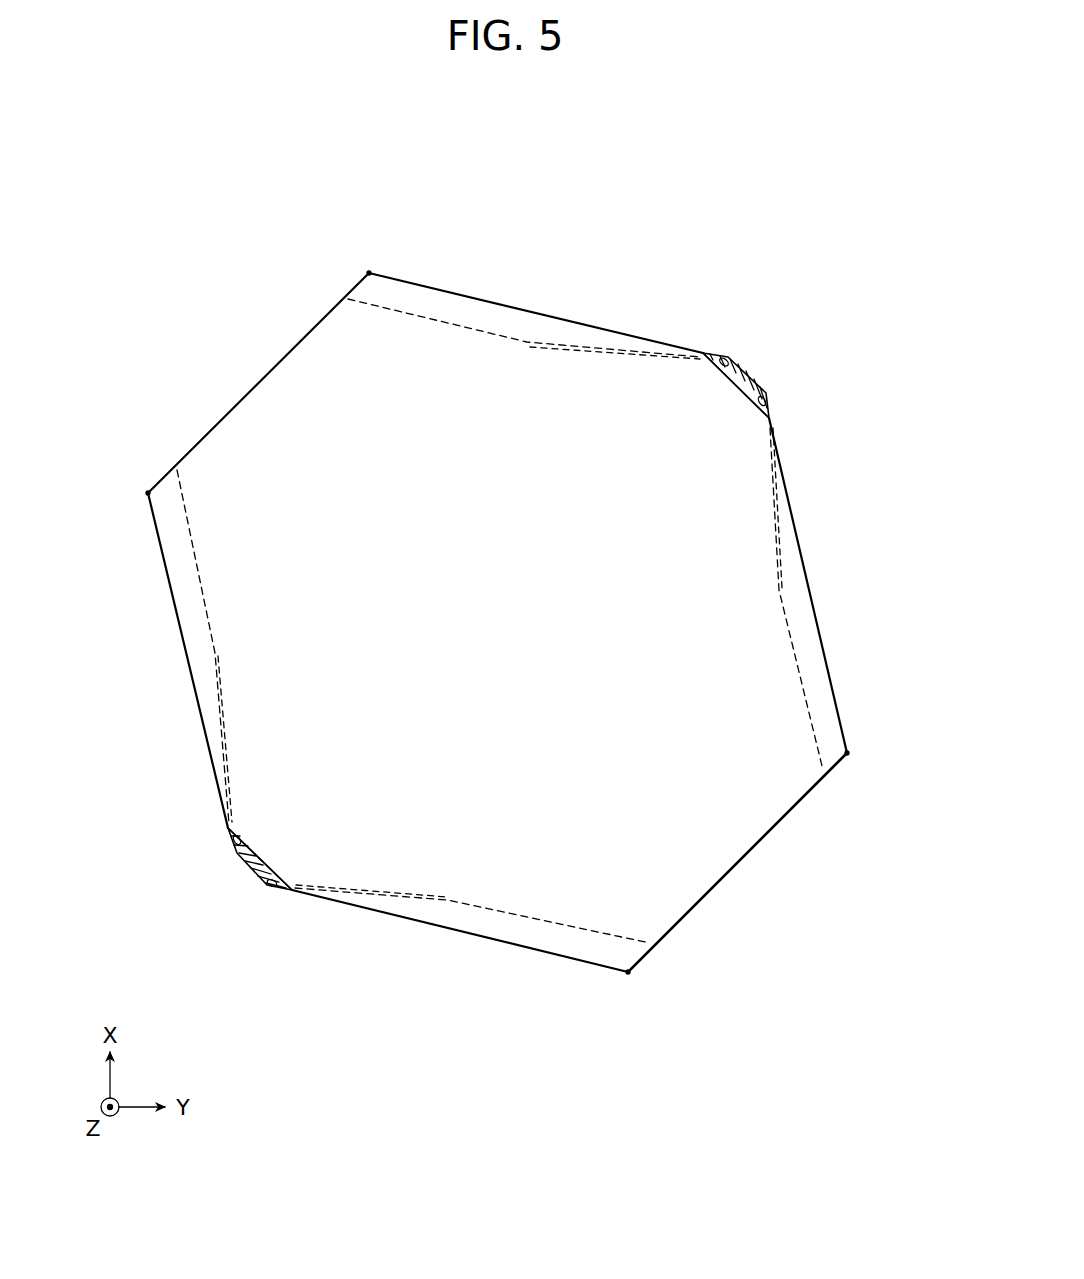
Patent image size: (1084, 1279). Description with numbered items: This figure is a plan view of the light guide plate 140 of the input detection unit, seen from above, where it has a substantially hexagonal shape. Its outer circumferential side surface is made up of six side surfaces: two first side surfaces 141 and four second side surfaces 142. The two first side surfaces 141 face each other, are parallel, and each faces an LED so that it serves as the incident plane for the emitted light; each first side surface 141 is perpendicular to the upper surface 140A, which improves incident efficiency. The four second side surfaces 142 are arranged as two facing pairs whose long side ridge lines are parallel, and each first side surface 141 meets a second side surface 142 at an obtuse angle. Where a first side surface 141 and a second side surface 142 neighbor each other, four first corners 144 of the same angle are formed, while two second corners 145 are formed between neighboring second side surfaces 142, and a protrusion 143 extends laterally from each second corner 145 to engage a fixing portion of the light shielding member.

The light guide plate 140 is at (888, 167).
The upper surface 140A is at (752, 816).
The first side surface 141 is at (260, 376).
The second side surface 142 is at (527, 325).
The protrusion 143 is at (750, 377).
The first corner 144 is at (369, 257).
The second corner 145 is at (746, 349).